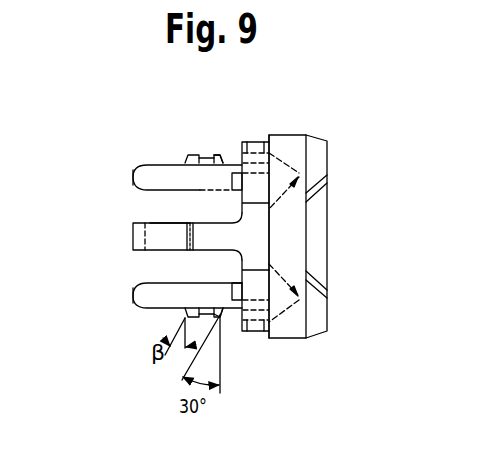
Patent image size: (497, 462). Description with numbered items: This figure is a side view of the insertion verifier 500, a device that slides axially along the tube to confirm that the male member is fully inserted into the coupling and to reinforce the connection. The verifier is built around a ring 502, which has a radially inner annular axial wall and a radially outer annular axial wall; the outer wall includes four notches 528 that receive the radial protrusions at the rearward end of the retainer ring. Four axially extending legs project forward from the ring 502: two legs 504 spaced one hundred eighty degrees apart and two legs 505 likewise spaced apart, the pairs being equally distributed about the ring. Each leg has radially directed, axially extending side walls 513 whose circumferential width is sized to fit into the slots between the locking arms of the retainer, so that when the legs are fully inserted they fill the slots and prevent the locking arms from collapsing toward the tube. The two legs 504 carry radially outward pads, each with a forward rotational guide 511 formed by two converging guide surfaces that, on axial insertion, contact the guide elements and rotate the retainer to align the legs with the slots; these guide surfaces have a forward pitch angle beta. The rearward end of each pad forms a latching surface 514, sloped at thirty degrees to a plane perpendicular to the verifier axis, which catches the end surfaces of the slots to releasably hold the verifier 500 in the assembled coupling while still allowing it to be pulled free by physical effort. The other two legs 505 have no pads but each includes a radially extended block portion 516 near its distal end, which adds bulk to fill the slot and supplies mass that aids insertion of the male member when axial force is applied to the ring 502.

The insertion verifier 500 is at (286, 112).
The ring 502 is at (297, 131).
The legs 504 is at (132, 176).
The legs 505 is at (130, 238).
The forward rotational guide 511 is at (197, 157).
The side walls 513 is at (163, 168).
The latching surface 514 is at (221, 157).
The block portion 516 is at (159, 222).
The notches 528 is at (268, 258).